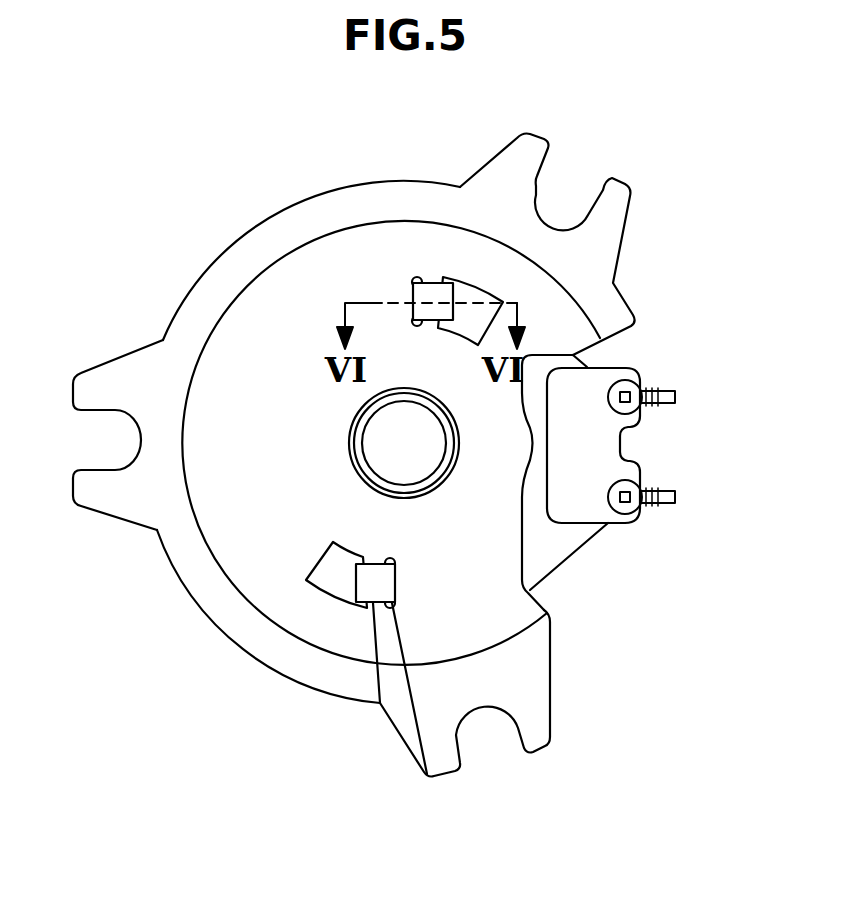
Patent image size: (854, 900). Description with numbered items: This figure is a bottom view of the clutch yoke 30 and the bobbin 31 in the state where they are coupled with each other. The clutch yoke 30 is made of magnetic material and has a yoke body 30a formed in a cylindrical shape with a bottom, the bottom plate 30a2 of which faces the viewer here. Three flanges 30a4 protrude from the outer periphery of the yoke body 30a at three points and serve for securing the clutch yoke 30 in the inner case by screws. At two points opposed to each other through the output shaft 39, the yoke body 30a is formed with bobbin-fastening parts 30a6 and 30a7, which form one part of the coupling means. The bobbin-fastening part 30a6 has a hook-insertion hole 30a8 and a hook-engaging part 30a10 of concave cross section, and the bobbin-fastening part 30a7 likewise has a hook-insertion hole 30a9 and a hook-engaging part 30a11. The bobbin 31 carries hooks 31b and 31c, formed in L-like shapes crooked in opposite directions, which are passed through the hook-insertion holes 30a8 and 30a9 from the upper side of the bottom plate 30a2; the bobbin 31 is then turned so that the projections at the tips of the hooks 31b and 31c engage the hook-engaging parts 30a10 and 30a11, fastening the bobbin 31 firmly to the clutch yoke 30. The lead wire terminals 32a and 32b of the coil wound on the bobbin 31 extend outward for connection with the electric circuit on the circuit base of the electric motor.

The clutch yoke 30 is at (323, 695).
The yoke body 30a is at (252, 642).
The bottom plate 30a2 is at (338, 248).
The flange 30a4 is at (97, 365).
The bobbin-fastening part 30a6 is at (521, 209).
The bobbin-fastening part 30a7 is at (352, 694).
The hook-insertion hole 30a8 is at (484, 292).
The hook-insertion hole 30a9 is at (330, 600).
The hook-engaging part 30a10 is at (418, 279).
The hook-engaging part 30a11 is at (432, 781).
The bobbin 31 is at (578, 557).
The hook 31b is at (433, 283).
The hook 31c is at (373, 604).
The lead wire terminal 32a is at (677, 392).
The lead wire terminal 32b is at (677, 492).
The output shaft 39 is at (385, 453).